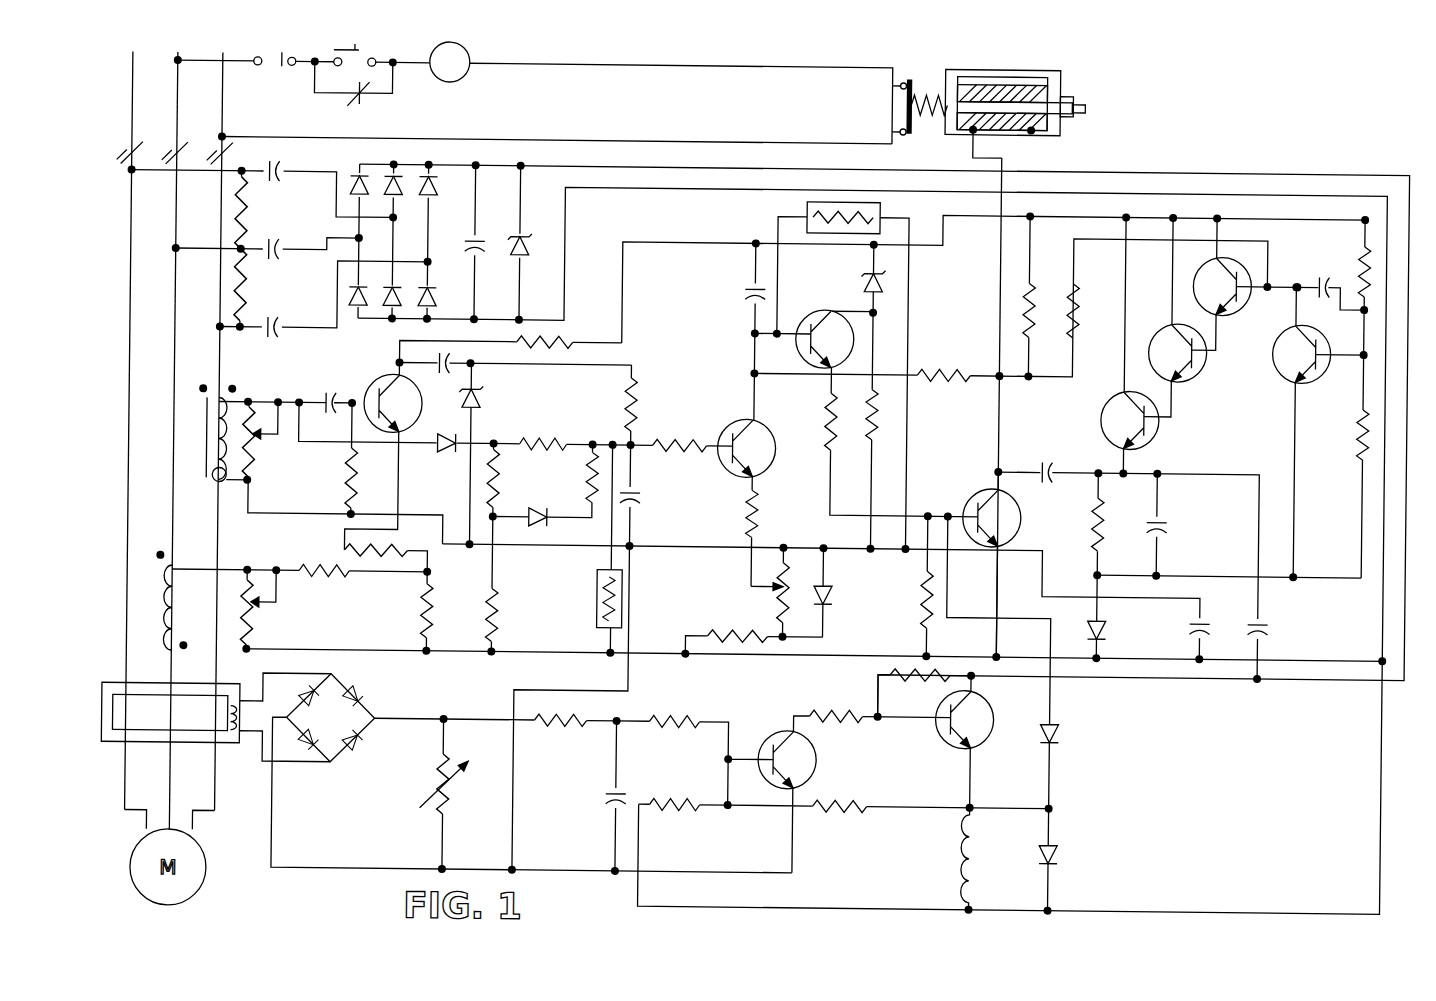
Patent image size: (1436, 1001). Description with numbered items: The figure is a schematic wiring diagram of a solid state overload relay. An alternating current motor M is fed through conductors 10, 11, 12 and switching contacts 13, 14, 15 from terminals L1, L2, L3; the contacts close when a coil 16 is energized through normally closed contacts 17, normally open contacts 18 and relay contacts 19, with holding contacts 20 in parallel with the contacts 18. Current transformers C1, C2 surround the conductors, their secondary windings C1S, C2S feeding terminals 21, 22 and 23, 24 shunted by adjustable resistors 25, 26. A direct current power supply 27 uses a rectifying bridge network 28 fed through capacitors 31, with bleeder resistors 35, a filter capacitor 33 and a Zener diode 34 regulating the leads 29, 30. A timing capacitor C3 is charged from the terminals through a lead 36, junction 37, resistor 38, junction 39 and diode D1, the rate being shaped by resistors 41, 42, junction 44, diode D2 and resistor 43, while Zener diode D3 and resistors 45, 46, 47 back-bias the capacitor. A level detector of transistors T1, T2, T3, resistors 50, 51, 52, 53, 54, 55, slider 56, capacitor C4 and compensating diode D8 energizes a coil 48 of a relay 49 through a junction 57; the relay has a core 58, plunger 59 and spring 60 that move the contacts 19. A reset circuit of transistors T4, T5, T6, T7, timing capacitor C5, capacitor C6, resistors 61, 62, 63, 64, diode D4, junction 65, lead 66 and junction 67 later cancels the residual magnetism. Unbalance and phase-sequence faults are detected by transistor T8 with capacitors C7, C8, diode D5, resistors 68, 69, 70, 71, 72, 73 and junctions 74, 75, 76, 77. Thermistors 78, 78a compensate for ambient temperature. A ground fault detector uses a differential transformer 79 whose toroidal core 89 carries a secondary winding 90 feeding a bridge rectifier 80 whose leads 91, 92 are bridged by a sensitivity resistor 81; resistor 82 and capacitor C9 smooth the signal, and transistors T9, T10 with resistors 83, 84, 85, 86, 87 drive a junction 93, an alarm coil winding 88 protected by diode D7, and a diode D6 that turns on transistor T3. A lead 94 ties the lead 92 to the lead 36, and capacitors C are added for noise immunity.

The terminal L1 is at (219, 418).
The terminal L2 is at (172, 428).
The terminal L3 is at (129, 417).
The conductor 10 is at (224, 806).
The conductor 11 is at (176, 806).
The conductor 12 is at (134, 806).
The switching contact 13 is at (211, 142).
The switching contact 14 is at (166, 142).
The switching contact 15 is at (120, 142).
The coil 16 is at (642, 92).
The normally closed switch contacts 17 is at (274, 72).
The normally open switch contacts 18 is at (363, 56).
The normally closed contacts 19 is at (882, 128).
The normally open contacts 20 is at (358, 104).
The output terminal 21 is at (248, 402).
The output terminal 22 is at (252, 486).
The output terminal 23 is at (252, 570).
The output terminal 24 is at (254, 656).
The adjustable resistor 25 is at (254, 456).
The adjustable resistor 26 is at (254, 618).
The direct current power supply 27 is at (518, 220).
The three phase full-wave rectifying bridge network 28 is at (390, 254).
The lead 29 is at (1240, 692).
The lead 30 is at (1213, 897).
The capacitor 31 is at (267, 330).
The capacitor 33 is at (466, 238).
The Zener diode 34 is at (524, 252).
The bleeder resistor 35 is at (232, 282).
The lead 36 is at (560, 548).
The junction 37 is at (632, 444).
The resistor 38 is at (541, 438).
The junction 39 is at (503, 432).
The resistor 41 is at (497, 466).
The resistor 42 is at (500, 604).
The resistor 43 is at (588, 480).
The junction 44 is at (497, 516).
The resistor 45 is at (872, 438).
The resistor 46 is at (781, 614).
The resistor 47 is at (722, 634).
The coil 48 is at (982, 137).
The relay 49 is at (992, 70).
The resistor 50 is at (680, 444).
The resistor 51 is at (758, 506).
The resistor 52 is at (825, 416).
The resistor 53 is at (952, 363).
The resistor 54 is at (1030, 285).
The resistor 55 is at (926, 604).
The slider 56 is at (752, 588).
The junction 57 is at (988, 470).
The ferrous core 58 is at (1058, 123).
The ferrous plunger 59 is at (964, 134).
The spring 60 is at (924, 86).
The resistor 61 is at (1104, 512).
The resistor 62 is at (1074, 285).
The resistor 63 is at (1358, 258).
The resistor 64 is at (1354, 446).
The junction 65 is at (1102, 478).
The lead 66 is at (1211, 570).
The junction 67 is at (1358, 314).
The resistor 68 is at (346, 488).
The resistor 69 is at (567, 346).
The resistor 70 is at (402, 554).
The resistor 71 is at (424, 608).
The resistor 72 is at (320, 570).
The resistor 73 is at (636, 396).
The junction 74 is at (344, 402).
The junction 75 is at (396, 366).
The junction 76 is at (433, 579).
The junction 77 is at (468, 366).
The negative temperature coefficient thermistor 78 is at (884, 202).
The positive temperature coefficient thermistor 78a is at (590, 614).
The differential transformer 79 is at (169, 712).
The full wave bridge rectifier 80 is at (317, 732).
The adjustable resistor 81 is at (440, 770).
The resistor 82 is at (552, 728).
The resistor 83 is at (668, 728).
The resistor 84 is at (942, 682).
The resistor 85 is at (824, 714).
The resistor 86 is at (682, 802).
The resistor 87 is at (848, 806).
The energizing coil winding 88 is at (976, 840).
The toroidal core 89 is at (164, 690).
The secondary winding 90 is at (240, 750).
The lead 91 is at (420, 718).
The lead 92 is at (370, 866).
The junction 93 is at (978, 808).
The lead 94 is at (630, 684).
The current transformer C1 is at (204, 422).
The secondary winding C1S is at (214, 492).
The current transformer C2 is at (164, 612).
The secondary winding C2S is at (191, 607).
The capacitor C3 is at (638, 500).
The capacitor C4 is at (742, 296).
The timing capacitor C5 is at (1050, 476).
The capacitor C6 is at (1318, 277).
The capacitor C7 is at (316, 424).
The capacitor C8 is at (446, 376).
The capacitor C9 is at (602, 796).
The capacitor C is at (1263, 611).
The diode D1 is at (448, 454).
The diode D2 is at (546, 512).
The Zener diode D3 is at (857, 279).
The diode D4 is at (1110, 625).
The diode D5 is at (478, 400).
The diode D6 is at (1064, 736).
The diode D7 is at (1067, 850).
The diode D8 is at (833, 590).
The transistor T1 is at (772, 446).
The transistor T2 is at (802, 356).
The transistor T3 is at (1021, 525).
The transistor T4 is at (1149, 438).
The transistor T5 is at (1196, 372).
The transistor T6 is at (1248, 301).
The transistor T7 is at (1321, 376).
The transistor T8 is at (420, 410).
The transistor T9 is at (822, 756).
The transistor T10 is at (991, 690).